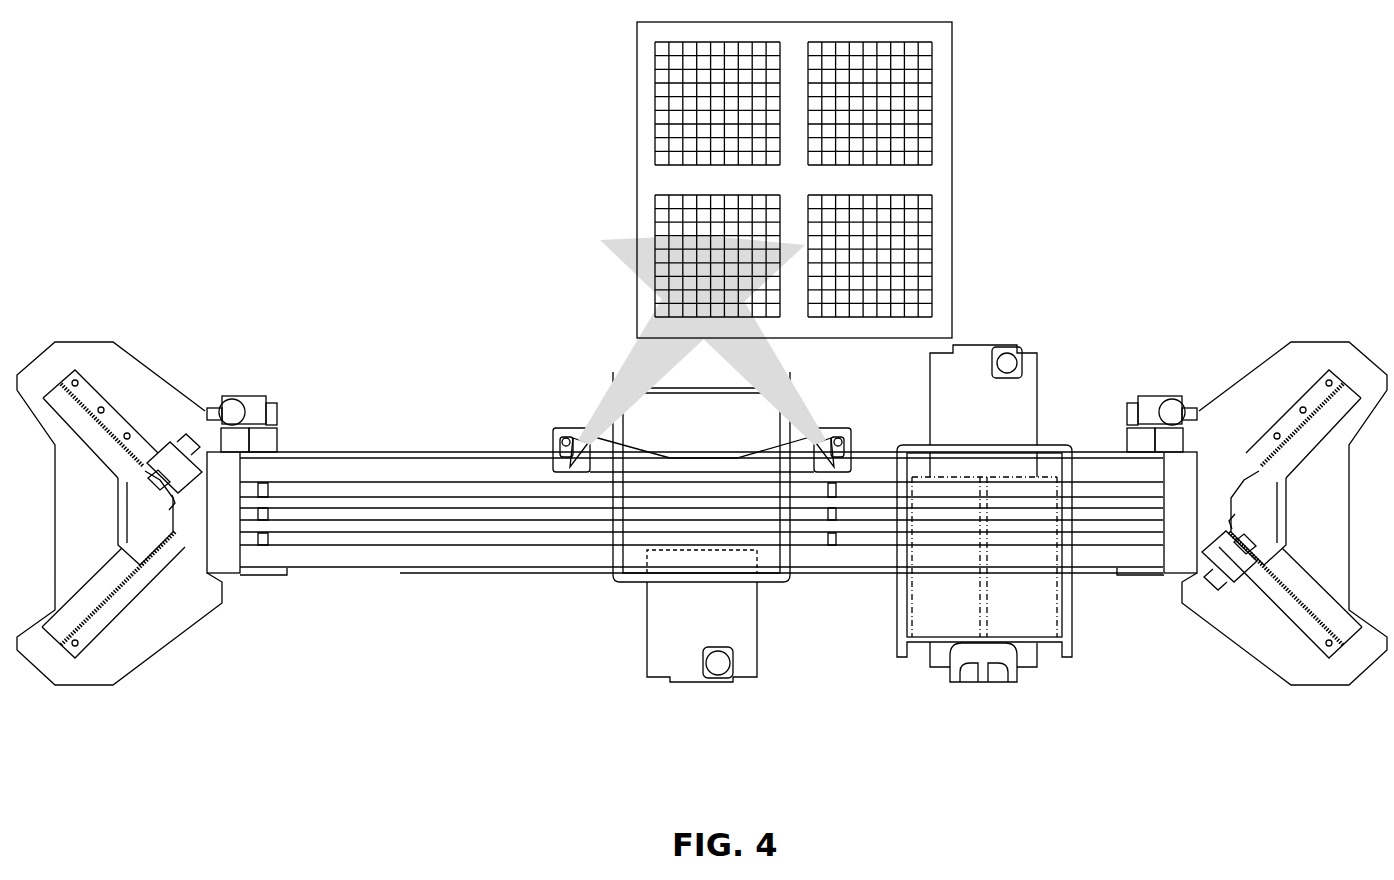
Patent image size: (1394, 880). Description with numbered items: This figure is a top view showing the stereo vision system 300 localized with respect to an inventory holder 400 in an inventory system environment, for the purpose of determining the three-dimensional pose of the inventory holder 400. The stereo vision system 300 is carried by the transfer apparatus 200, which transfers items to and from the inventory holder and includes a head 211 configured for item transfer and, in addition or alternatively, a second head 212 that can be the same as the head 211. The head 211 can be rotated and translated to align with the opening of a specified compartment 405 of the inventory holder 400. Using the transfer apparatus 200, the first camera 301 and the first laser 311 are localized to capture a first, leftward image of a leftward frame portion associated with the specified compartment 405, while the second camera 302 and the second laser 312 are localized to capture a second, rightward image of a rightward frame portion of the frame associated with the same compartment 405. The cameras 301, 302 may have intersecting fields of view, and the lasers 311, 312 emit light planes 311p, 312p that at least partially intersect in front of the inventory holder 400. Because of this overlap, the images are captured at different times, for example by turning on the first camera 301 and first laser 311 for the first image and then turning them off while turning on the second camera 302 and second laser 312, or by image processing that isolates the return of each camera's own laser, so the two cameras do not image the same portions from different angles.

The transfer apparatus 200 is at (1268, 330).
The head 211 is at (663, 657).
The second head 212 is at (932, 660).
The stereo vision system 300 is at (745, 457).
The first camera 301 is at (560, 448).
The second camera 302 is at (843, 450).
The first laser 311 is at (580, 440).
The second laser 312 is at (820, 440).
The first sensing beam 311p is at (622, 315).
The second sensing beam 312p is at (782, 351).
The inventory holder 400 is at (798, 180).
The specified compartment 405 is at (695, 199).